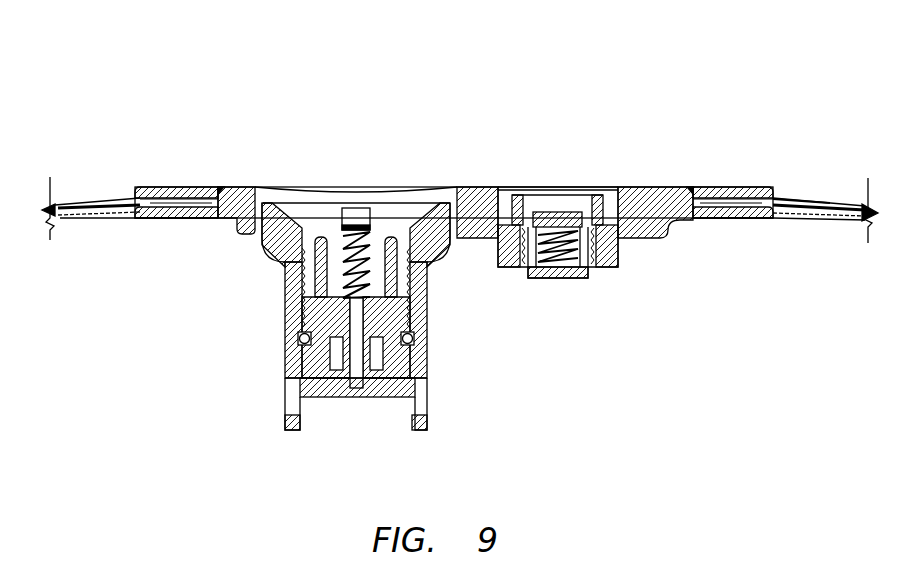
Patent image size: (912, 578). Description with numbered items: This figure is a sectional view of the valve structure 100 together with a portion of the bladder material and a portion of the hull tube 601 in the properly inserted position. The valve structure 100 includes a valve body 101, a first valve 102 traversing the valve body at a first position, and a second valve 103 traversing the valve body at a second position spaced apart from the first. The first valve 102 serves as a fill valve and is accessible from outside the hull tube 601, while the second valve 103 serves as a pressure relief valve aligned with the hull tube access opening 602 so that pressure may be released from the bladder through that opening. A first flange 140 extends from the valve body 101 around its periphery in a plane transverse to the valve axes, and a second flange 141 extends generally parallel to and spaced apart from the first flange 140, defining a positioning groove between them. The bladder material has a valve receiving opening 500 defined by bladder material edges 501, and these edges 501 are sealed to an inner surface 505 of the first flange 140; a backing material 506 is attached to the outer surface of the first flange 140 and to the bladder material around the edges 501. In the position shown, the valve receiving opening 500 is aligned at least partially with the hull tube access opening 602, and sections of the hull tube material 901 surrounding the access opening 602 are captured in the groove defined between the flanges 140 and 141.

The valve structure 100 is at (526, 71).
The valve body 101 is at (472, 188).
The first valve 102 is at (357, 181).
The second valve 103 is at (563, 181).
The first flange 140 is at (187, 218).
The second flange 141 is at (170, 186).
The valve receiving opening 500 is at (222, 187).
The bladder material edges 501 is at (153, 219).
The inner surface 505 is at (780, 200).
The backing material 506 is at (97, 219).
The hull tube 601 is at (93, 199).
The access opening 602 is at (205, 200).
The hull tube material 901 is at (145, 190).